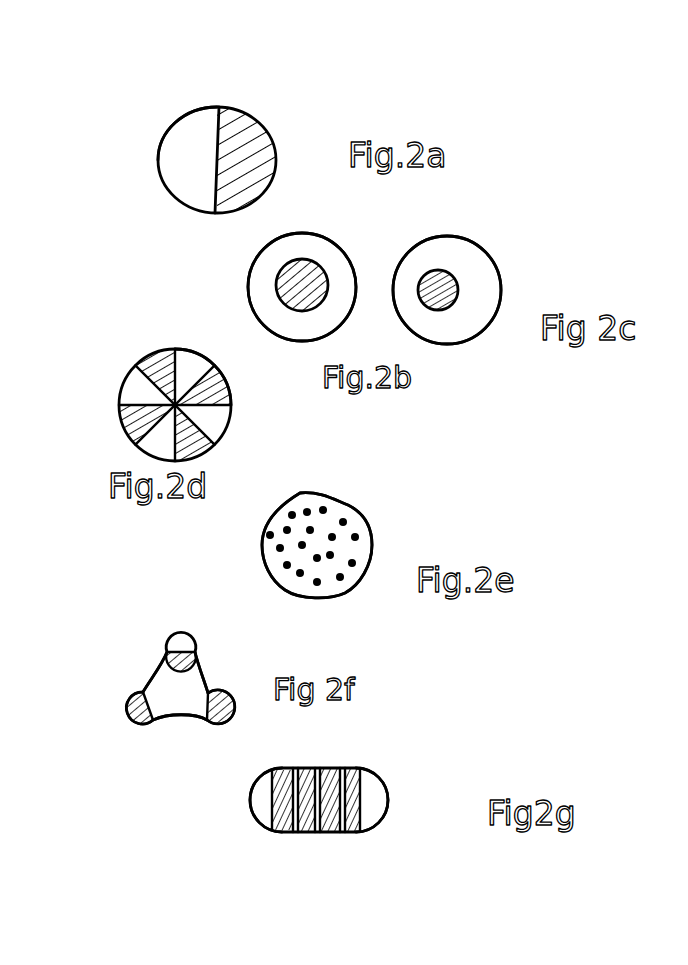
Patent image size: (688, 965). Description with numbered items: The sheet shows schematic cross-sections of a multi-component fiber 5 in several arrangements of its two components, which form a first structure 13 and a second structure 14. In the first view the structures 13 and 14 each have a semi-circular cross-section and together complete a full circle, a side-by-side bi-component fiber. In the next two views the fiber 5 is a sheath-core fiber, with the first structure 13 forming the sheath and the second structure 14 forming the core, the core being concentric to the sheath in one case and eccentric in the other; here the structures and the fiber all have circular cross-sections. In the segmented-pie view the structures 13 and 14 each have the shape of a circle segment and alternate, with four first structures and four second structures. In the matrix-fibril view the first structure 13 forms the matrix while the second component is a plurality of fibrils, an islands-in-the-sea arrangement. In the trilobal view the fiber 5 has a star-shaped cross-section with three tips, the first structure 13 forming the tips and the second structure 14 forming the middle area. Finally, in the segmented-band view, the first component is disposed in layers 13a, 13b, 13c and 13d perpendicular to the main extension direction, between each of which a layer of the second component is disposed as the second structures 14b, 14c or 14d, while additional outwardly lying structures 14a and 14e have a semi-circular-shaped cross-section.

In FIG. 2A, the multi-component fiber 5 is at (211, 80).
In FIG. 2B, the multi-component fiber 5 is at (230, 277).
In FIG. 2C, the multi-component fiber 5 is at (483, 222).
In FIG. 2D, the multi-component fiber 5 is at (110, 398).
In FIG. 2E, the multi-component fiber 5 is at (362, 496).
In FIG. 2F, the multi-component fiber 5 is at (222, 655).
In FIG. 2G, the multi-component fiber 5 is at (398, 765).
In FIG. 2A, the first structure 13 is at (238, 130).
In FIG. 2B, the first structure 13 is at (265, 304).
In FIG. 2C, the first structure 13 is at (493, 294).
In FIG. 2D, the first structure 13 is at (164, 362).
In FIG. 2E, the first structure 13 is at (360, 522).
In FIG. 2F, the first structure 13 is at (182, 633).
In FIG. 2A, the second structure 14 is at (182, 143).
In FIG. 2B, the second structure 14 is at (302, 270).
In FIG. 2C, the second structure 14 is at (450, 283).
In FIG. 2D, the second structure 14 is at (136, 382).
In FIG. 2E, the second structure 14 is at (357, 562).
In FIG. 2F, the second structure 14 is at (168, 687).
In FIG. 2G, the layer of the first structure 13a is at (360, 768).
In FIG. 2G, the layer of the first structure 13b is at (327, 832).
In FIG. 2G, the layer of the first structure 13c is at (303, 768).
In FIG. 2G, the layer of the first structure 13d is at (280, 796).
In FIG. 2G, the outer second structure 14a is at (375, 800).
In FIG. 2G, the second structure layer 14b is at (342, 832).
In FIG. 2G, the second structure layer 14c is at (312, 832).
In FIG. 2G, the second structure layer 14d is at (285, 832).
In FIG. 2G, the outer second structure 14e is at (260, 790).